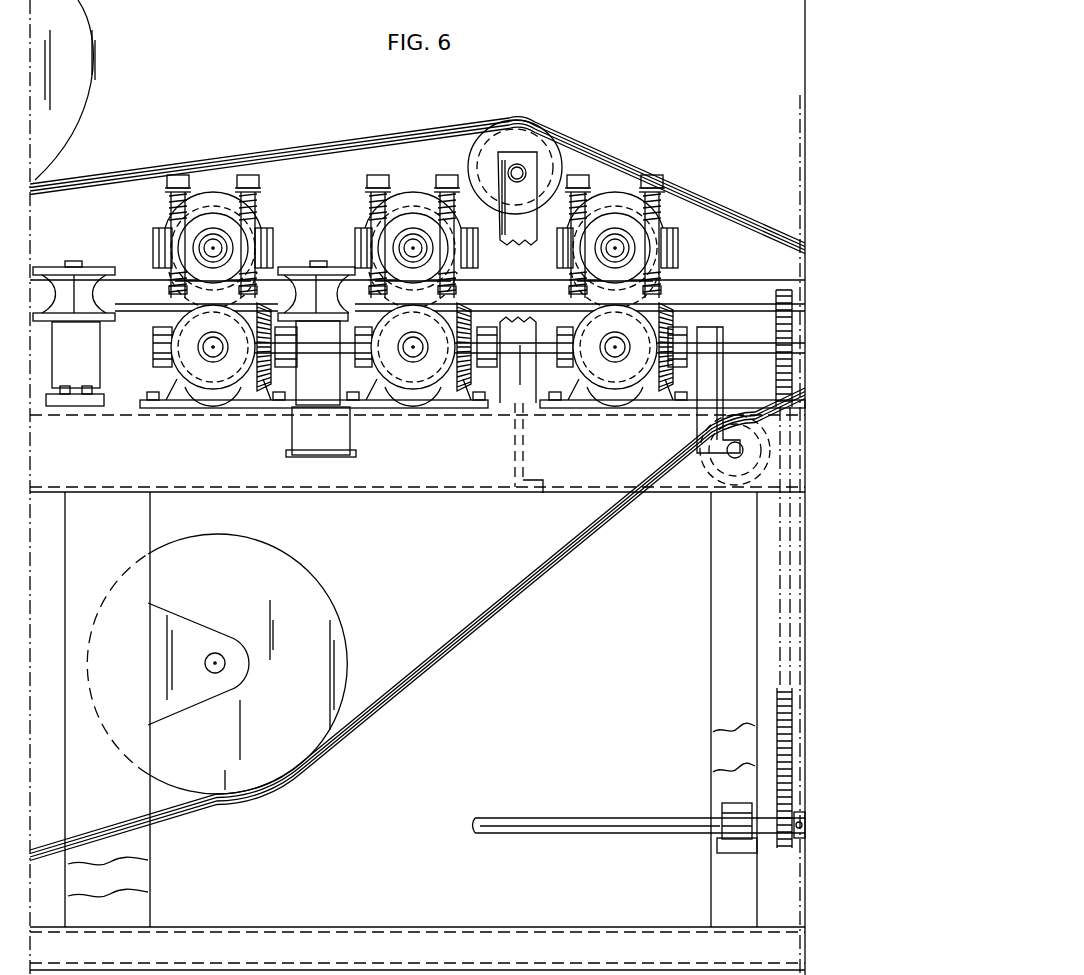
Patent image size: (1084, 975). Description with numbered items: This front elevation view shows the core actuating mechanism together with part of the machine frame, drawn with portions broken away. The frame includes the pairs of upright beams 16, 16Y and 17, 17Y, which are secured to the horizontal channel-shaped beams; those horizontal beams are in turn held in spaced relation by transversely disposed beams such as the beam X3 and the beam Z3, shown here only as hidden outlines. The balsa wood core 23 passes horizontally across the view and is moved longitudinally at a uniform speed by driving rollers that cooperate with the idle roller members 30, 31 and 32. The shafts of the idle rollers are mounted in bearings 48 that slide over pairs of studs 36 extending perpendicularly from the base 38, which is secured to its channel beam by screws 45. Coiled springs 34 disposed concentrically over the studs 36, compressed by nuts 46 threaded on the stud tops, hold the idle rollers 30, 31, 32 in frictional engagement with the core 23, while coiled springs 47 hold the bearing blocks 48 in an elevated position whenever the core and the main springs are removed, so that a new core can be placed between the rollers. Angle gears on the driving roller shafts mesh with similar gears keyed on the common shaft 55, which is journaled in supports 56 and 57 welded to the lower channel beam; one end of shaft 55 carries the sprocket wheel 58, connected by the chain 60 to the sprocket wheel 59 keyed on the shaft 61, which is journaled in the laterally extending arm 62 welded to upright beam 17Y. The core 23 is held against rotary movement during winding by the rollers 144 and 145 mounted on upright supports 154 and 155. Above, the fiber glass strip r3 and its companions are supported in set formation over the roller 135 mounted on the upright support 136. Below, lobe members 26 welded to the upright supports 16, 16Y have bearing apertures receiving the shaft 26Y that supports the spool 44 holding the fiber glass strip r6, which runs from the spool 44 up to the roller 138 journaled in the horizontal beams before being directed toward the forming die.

The upright beam 16 is at (130, 876).
The upright beam 16Y is at (135, 915).
The upright beam 17 is at (725, 748).
The upright beam 17Y is at (725, 876).
The core 23 is at (725, 283).
The lobe member 26 is at (185, 700).
The shaft 26Y is at (215, 652).
The idle roller member 30 is at (165, 208).
The idle roller member 31 is at (418, 208).
The idle roller member 32 is at (613, 208).
The coiled spring 34 is at (655, 188).
The stud 36 is at (448, 183).
The base 38 is at (168, 407).
The spool 44 is at (313, 588).
The screw 45 is at (368, 397).
The nut 46 is at (246, 178).
The coiled spring 47 is at (578, 292).
The bearing 48 is at (162, 244).
The common shaft 55 is at (525, 350).
The support 56 is at (304, 432).
The support 57 is at (708, 390).
The sprocket wheel 58 is at (785, 372).
The sprocket wheel 59 is at (795, 845).
The chain 60 is at (775, 690).
The shaft 61 is at (544, 827).
The laterally extending arm 62 is at (725, 824).
The roller 135 is at (515, 132).
The upright support 136 is at (530, 153).
The roller 138 is at (710, 476).
The roller 144 is at (95, 265).
The roller 145 is at (290, 265).
The upright support 154 is at (82, 367).
The upright support 155 is at (302, 330).
The fiber glass strip r3 is at (126, 182).
The fiber glass strip r6 is at (487, 618).
The transversely disposed beam X3 is at (521, 440).
The transversely disposed beam Z3 is at (545, 962).